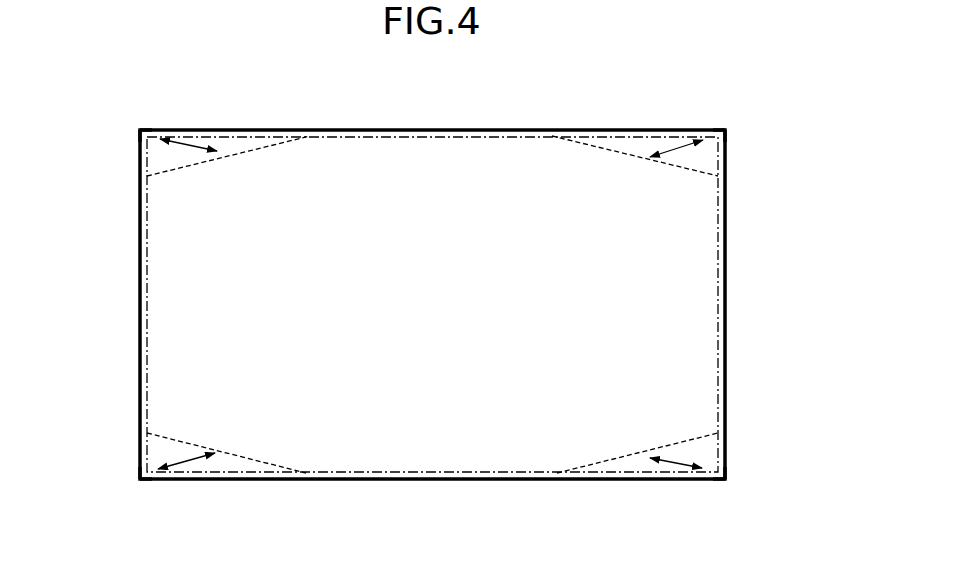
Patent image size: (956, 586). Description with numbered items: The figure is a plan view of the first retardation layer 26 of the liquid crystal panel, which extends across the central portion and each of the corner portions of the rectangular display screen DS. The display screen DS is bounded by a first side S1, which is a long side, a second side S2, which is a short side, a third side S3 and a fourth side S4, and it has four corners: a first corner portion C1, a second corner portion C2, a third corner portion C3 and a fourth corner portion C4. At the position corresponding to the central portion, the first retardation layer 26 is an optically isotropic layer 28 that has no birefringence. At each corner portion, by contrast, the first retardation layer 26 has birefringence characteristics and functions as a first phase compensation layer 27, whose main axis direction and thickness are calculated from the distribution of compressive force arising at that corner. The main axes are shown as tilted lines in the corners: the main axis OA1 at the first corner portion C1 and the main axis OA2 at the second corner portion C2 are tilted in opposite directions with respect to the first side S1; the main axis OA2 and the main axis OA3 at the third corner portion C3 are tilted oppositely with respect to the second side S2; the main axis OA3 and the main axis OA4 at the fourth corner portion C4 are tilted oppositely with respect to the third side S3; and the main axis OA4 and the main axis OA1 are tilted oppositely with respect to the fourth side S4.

The first retardation layer 26 is at (759, 120).
The first phase compensation layer 27 is at (233, 144).
The isotropic layer 28 is at (703, 268).
The display screen DS is at (395, 165).
The first side S1 is at (474, 133).
The second side S2 is at (719, 325).
The third side S3 is at (433, 478).
The fourth side S4 is at (142, 302).
The first corner portion C1 is at (137, 131).
The second corner portion C2 is at (726, 127).
The third corner portion C3 is at (730, 482).
The fourth corner portion C4 is at (137, 482).
The main axis OA1 is at (186, 144).
The main axis OA2 is at (680, 148).
The main axis OA3 is at (680, 462).
The main axis OA4 is at (187, 462).